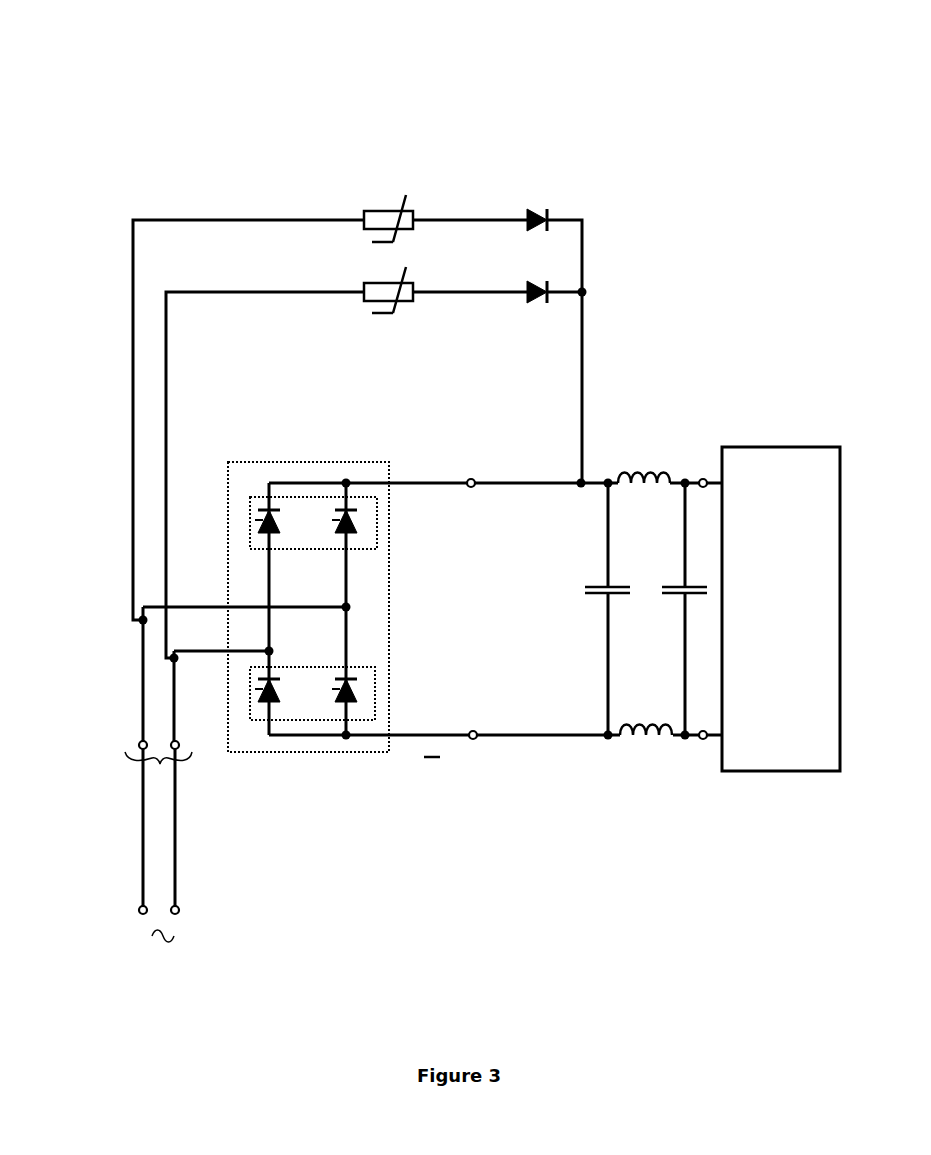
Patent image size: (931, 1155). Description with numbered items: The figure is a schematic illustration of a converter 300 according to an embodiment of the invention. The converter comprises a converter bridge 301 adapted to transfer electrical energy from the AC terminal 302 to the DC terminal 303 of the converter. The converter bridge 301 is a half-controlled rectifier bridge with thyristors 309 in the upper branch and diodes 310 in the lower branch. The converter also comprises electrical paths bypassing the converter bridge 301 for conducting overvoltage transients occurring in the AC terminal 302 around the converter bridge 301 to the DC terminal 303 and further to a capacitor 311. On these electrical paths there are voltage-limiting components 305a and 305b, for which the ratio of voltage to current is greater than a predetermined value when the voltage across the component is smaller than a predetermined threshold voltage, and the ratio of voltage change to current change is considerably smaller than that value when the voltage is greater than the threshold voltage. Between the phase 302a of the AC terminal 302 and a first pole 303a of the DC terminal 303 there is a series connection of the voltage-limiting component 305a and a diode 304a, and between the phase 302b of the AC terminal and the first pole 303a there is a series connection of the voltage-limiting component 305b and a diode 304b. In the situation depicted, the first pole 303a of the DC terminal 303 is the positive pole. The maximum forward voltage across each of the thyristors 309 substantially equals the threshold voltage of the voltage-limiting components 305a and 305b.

The converter 300 is at (300, 100).
The converter bridge 301 is at (345, 462).
The AC terminal 302 is at (160, 760).
The phase of the AC terminal 302a is at (141, 866).
The phase of the AC terminal 302b is at (177, 866).
The DC terminal 303 is at (485, 470).
The first pole of the DC terminal 303a is at (472, 478).
The diode 304a is at (538, 209).
The diode 304b is at (538, 303).
The voltage-limiting component 305a is at (383, 210).
The voltage-limiting component 305b is at (405, 313).
The thyristors 309 is at (258, 498).
The diodes 310 is at (258, 722).
The capacitor 311 is at (623, 587).